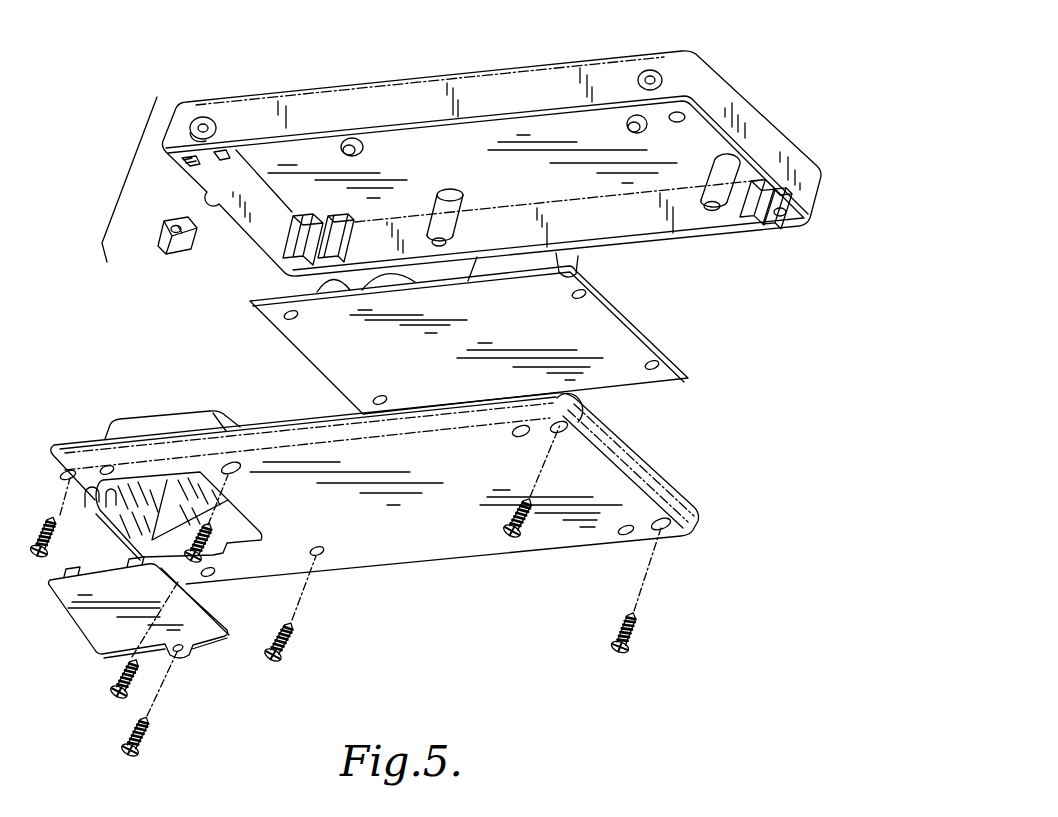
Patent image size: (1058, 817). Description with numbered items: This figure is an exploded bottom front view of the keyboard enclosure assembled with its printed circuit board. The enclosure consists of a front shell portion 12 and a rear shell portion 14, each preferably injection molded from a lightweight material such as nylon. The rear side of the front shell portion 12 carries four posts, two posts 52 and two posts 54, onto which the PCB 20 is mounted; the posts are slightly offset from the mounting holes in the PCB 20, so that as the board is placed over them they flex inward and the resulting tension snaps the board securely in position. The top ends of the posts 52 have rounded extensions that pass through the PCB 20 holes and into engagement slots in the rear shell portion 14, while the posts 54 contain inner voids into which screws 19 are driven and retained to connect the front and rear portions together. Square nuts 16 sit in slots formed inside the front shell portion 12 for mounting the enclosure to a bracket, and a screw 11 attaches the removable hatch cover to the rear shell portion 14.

The screw 11 is at (142, 755).
The front shell portion 12 is at (710, 97).
The rear shell portion 14 is at (607, 512).
The square nuts 16 is at (158, 245).
The screws 19 is at (118, 686).
The PCB 20 is at (572, 330).
The posts 52 is at (727, 167).
The posts 54 is at (433, 203).